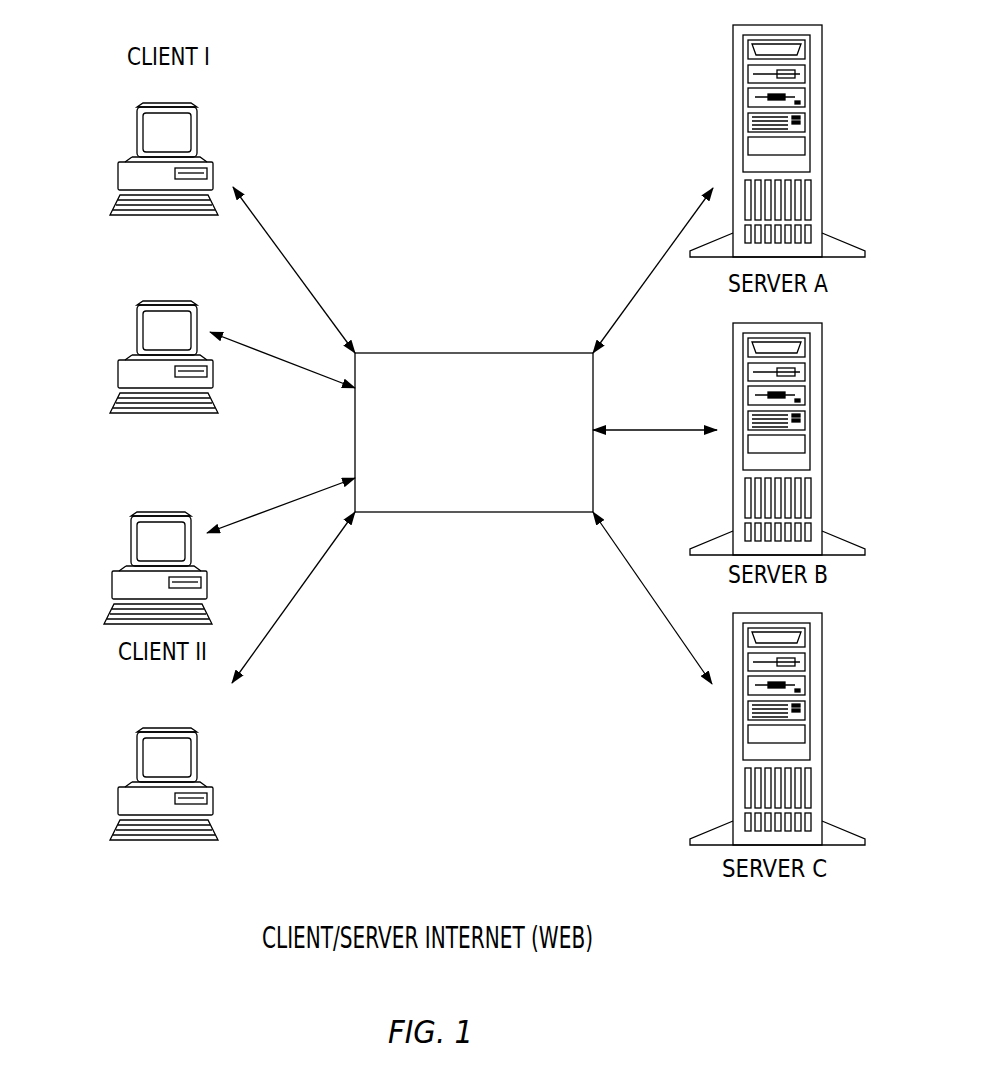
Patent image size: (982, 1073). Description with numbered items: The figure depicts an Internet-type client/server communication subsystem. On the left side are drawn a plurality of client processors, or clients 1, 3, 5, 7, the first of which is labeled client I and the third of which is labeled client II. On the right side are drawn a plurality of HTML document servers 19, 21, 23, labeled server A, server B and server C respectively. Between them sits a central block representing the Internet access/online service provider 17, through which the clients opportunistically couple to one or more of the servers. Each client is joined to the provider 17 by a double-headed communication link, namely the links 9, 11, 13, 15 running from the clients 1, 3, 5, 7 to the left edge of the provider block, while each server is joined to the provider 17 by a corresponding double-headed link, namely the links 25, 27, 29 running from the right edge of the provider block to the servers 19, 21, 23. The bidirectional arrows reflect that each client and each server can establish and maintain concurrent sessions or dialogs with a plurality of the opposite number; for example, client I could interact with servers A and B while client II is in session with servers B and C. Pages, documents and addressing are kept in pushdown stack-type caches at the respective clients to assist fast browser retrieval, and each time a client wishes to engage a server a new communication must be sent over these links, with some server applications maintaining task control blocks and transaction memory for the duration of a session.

The client processor 1 is at (136, 133).
The client processor 3 is at (136, 330).
The client processor 5 is at (130, 546).
The client processor 7 is at (136, 757).
The communication link 9 is at (278, 242).
The communication link 11 is at (288, 360).
The communication link 13 is at (300, 493).
The communication link 15 is at (300, 598).
The internet access/online service provider 17 is at (460, 352).
The HTML document server 19 is at (733, 62).
The HTML document server 21 is at (732, 472).
The HTML document server 23 is at (730, 753).
The communication link 25 is at (668, 245).
The communication link 27 is at (632, 428).
The communication link 29 is at (647, 604).